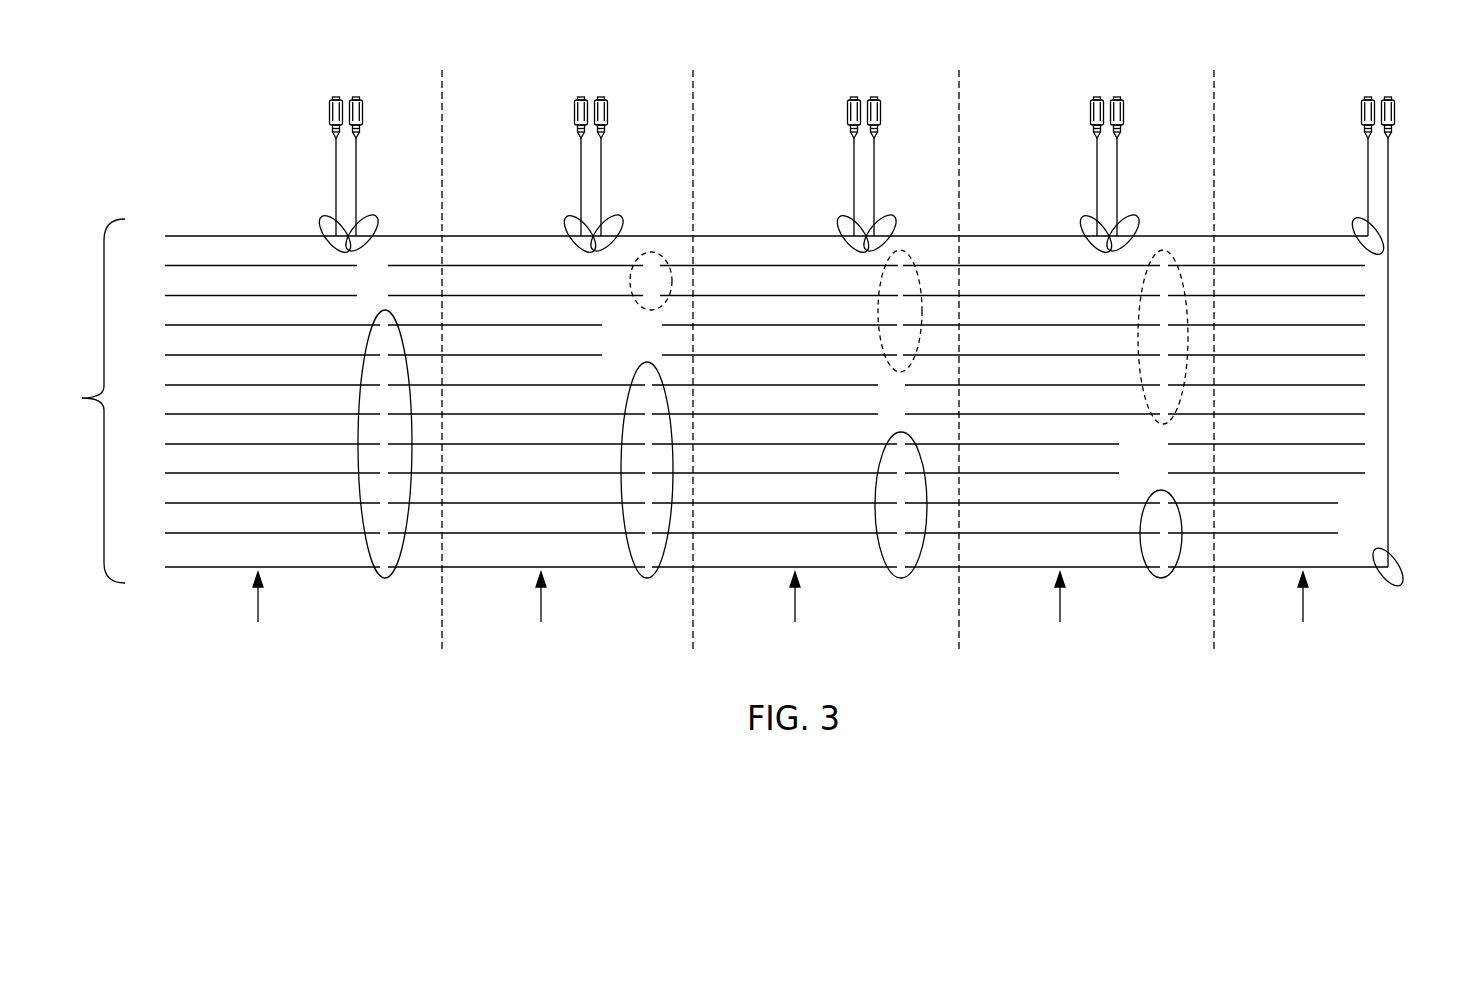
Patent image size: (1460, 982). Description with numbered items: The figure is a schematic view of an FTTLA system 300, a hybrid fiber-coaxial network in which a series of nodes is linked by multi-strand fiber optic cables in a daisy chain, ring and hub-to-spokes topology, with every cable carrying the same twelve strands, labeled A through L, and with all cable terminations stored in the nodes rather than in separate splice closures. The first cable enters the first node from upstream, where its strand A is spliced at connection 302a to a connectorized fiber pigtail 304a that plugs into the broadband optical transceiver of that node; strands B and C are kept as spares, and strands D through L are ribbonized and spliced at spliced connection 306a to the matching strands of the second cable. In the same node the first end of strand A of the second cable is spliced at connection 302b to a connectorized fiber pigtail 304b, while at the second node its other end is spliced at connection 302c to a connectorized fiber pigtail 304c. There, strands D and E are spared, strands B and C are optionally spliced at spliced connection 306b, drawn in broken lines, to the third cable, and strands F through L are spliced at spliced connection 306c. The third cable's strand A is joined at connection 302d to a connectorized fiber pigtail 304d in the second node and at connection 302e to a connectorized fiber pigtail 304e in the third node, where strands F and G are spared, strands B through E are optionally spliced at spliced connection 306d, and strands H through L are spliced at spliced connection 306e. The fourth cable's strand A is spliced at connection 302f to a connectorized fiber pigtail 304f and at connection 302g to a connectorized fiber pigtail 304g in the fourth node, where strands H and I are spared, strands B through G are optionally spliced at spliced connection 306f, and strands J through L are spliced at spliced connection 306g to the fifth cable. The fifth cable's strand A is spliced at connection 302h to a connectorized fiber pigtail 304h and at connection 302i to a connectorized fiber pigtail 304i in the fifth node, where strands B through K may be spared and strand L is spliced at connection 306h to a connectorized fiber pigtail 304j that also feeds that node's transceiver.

The FTTLA system 300 is at (190, 112).
The connection 302a is at (322, 218).
The connection 302b is at (375, 214).
The connection 302c is at (567, 218).
The connection 302d is at (620, 214).
The connection 302e is at (840, 218).
The connection 302f is at (893, 214).
The connection 302g is at (1083, 218).
The connection 302h is at (1136, 214).
The connection 302i is at (1357, 218).
The connectorized fiber pigtail 304a is at (336, 157).
The connectorized fiber pigtail 304b is at (356, 157).
The connectorized fiber pigtail 304c is at (581, 157).
The connectorized fiber pigtail 304d is at (601, 157).
The connectorized fiber pigtail 304e is at (854, 157).
The connectorized fiber pigtail 304f is at (874, 157).
The connectorized fiber pigtail 304g is at (1097, 157).
The connectorized fiber pigtail 304h is at (1117, 157).
The connectorized fiber pigtail 304i is at (1368, 157).
The connectorized fiber pigtail 304j is at (1388, 162).
The spliced connection 306a is at (385, 578).
The spliced connection 306b is at (670, 273).
The spliced connection 306c is at (647, 578).
The spliced connection 306d is at (918, 270).
The spliced connection 306e is at (901, 578).
The spliced connection 306f is at (1180, 270).
The spliced connection 306g is at (1161, 578).
The connection 306h is at (1393, 585).